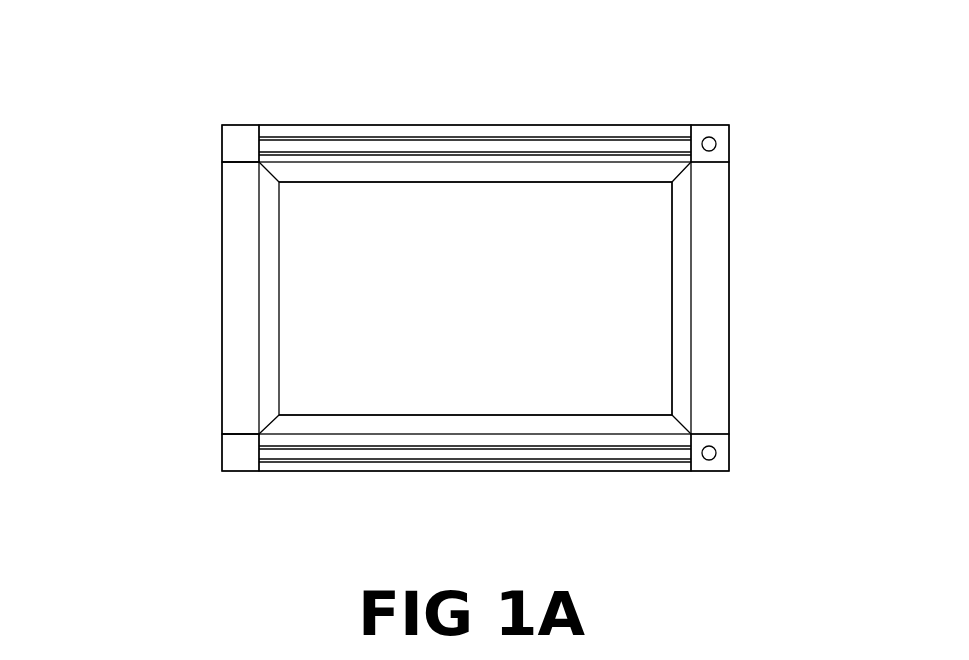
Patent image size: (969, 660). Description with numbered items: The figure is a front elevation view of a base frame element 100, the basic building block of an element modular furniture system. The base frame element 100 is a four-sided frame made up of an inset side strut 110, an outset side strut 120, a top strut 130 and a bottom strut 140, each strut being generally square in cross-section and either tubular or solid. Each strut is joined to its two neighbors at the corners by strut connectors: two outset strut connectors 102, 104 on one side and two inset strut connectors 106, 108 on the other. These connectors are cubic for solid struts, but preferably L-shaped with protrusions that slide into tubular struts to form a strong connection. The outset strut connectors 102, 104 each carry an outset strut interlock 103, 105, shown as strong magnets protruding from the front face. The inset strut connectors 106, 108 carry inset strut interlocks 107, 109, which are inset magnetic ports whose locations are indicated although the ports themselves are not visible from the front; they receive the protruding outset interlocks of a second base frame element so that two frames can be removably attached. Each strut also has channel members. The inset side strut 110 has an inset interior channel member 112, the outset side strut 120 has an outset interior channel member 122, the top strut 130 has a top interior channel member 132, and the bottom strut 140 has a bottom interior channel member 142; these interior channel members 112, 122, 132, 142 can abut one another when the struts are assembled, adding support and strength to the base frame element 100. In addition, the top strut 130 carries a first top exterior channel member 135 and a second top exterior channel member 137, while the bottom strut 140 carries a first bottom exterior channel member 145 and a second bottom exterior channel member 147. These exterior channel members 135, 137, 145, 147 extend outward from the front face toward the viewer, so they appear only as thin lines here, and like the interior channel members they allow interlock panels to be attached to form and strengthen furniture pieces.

The base frame element 100 is at (227, 84).
The outset strut connector 102 is at (729, 125).
The outset strut interlock 103 is at (716, 144).
The outset strut connector 104 is at (729, 472).
The outset strut interlock 105 is at (729, 447).
The inset strut connector 106 is at (222, 471).
The inset strut interlock 107 is at (198, 452).
The inset strut connector 108 is at (222, 126).
The inset strut interlock 109 is at (198, 150).
The inset side strut 110 is at (222, 317).
The inset interior channel member 112 is at (279, 285).
The outset side strut 120 is at (729, 313).
The outset interior channel member 122 is at (672, 285).
The top strut 130 is at (380, 125).
The top interior channel member 132 is at (475, 182).
The first top exterior channel member 135 is at (530, 138).
The second top exterior channel member 137 is at (650, 150).
The bottom strut 140 is at (568, 472).
The bottom interior channel member 142 is at (473, 415).
The first bottom exterior channel member 145 is at (402, 462).
The second bottom exterior channel member 147 is at (272, 445).